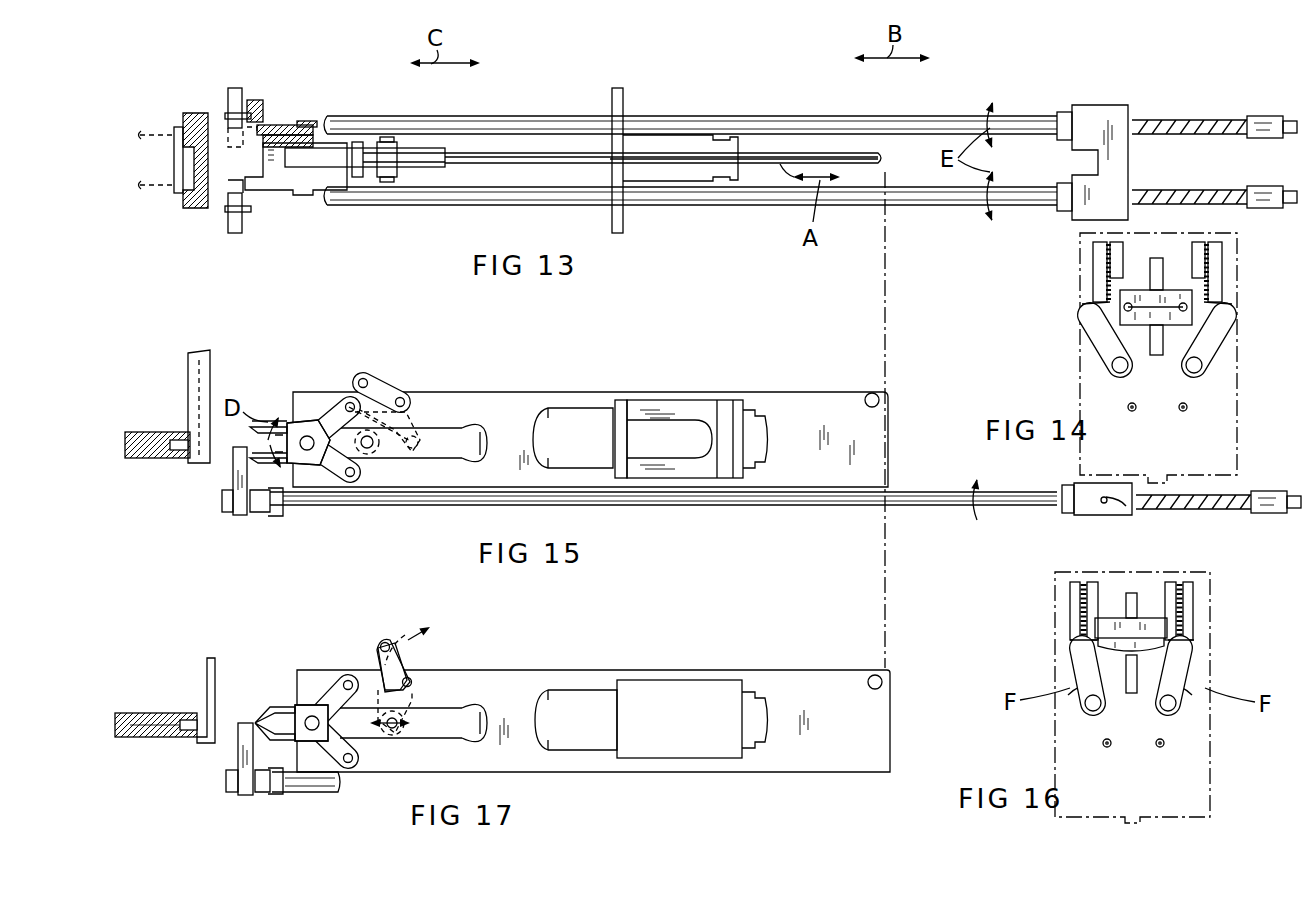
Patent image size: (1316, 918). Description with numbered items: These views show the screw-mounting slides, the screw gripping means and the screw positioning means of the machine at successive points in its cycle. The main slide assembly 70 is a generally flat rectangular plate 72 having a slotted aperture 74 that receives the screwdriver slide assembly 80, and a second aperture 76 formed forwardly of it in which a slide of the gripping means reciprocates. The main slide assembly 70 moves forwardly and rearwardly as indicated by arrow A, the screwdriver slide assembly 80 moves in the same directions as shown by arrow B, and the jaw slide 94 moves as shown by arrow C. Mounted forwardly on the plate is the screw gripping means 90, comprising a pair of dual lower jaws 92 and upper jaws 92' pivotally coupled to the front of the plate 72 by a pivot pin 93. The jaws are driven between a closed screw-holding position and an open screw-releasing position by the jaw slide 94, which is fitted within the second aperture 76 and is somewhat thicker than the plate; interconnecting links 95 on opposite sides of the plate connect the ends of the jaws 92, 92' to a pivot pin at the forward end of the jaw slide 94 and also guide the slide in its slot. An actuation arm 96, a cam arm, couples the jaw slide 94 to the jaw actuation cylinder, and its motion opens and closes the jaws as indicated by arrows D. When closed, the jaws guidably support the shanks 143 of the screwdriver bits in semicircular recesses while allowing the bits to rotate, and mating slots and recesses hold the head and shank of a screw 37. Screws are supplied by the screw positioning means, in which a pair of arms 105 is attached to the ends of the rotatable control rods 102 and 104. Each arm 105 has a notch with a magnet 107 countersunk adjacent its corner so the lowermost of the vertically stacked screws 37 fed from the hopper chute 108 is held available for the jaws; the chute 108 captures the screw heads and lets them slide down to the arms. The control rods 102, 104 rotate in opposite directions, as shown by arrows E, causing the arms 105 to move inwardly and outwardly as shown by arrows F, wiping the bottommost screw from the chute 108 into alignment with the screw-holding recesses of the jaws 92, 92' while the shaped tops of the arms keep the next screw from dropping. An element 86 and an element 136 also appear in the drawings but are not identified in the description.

In FIG. 14, the screw 37 is at (1210, 260).
In FIG. 13, the main slide assembly 70 is at (826, 148).
In FIG. 14, the main slide assembly 70 is at (1162, 267).
In FIG. 16, the main slide assembly 70 is at (1139, 600).
In FIG. 15, the main slide assembly 70 is at (794, 385).
In FIG. 17, the main slide assembly 70 is at (792, 662).
In FIG. 13, the plate 72 is at (500, 152).
In FIG. 15, the plate 72 is at (512, 391).
In FIG. 17, the plate 72 is at (512, 671).
In FIG. 15, the slotted aperture 74 is at (580, 424).
In FIG. 17, the slotted aperture 74 is at (588, 702).
In FIG. 15, the second aperture 76 is at (475, 433).
In FIG. 17, the second aperture 76 is at (472, 728).
In FIG. 13, the screwdriver slide assembly 80 is at (674, 137).
In FIG. 15, the screwdriver slide assembly 80 is at (691, 405).
In FIG. 17, the screwdriver slide assembly 80 is at (677, 702).
In FIG. 13, the bracket 86 is at (621, 88).
In FIG. 15, the bracket 86 is at (620, 400).
In FIG. 13, the screw gripping means 90 is at (415, 147).
In FIG. 15, the lower jaws 92 is at (269, 502).
In FIG. 15, the upper jaws 92' is at (268, 390).
In FIG. 15, the pivot pin 93 is at (307, 436).
In FIG. 13, the jaw slide 94 is at (415, 168).
In FIG. 15, the jaw slide 94 is at (436, 428).
In FIG. 17, the jaw slide 94 is at (420, 712).
In FIG. 13, the interconnecting links 95 is at (357, 142).
In FIG. 15, the interconnecting links 95 is at (375, 455).
In FIG. 15, the actuation arm 96 is at (383, 384).
In FIG. 17, the actuation arm 96 is at (410, 670).
In FIG. 13, the control rod 102 is at (922, 206).
In FIG. 14, the control rod 102 is at (1203, 369).
In FIG. 16, the control rod 102 is at (1172, 703).
In FIG. 15, the control rod 102 is at (305, 508).
In FIG. 17, the control rod 102 is at (295, 792).
In FIG. 13, the control rod 104 is at (930, 116).
In FIG. 14, the control rod 104 is at (1110, 365).
In FIG. 16, the control rod 104 is at (1090, 705).
In FIG. 13, the arms 105 is at (236, 88).
In FIG. 14, the arms 105 is at (1088, 343).
In FIG. 16, the arms 105 is at (1070, 661).
In FIG. 15, the arms 105 is at (233, 482).
In FIG. 17, the arms 105 is at (238, 752).
In FIG. 14, the magnet 107 is at (1085, 312).
In FIG. 14, the hopper chute 108 is at (1093, 255).
In FIG. 16, the hopper chute 108 is at (1070, 593).
In FIG. 15, the pin 136 is at (350, 405).
In FIG. 13, the shanks 143 is at (272, 125).